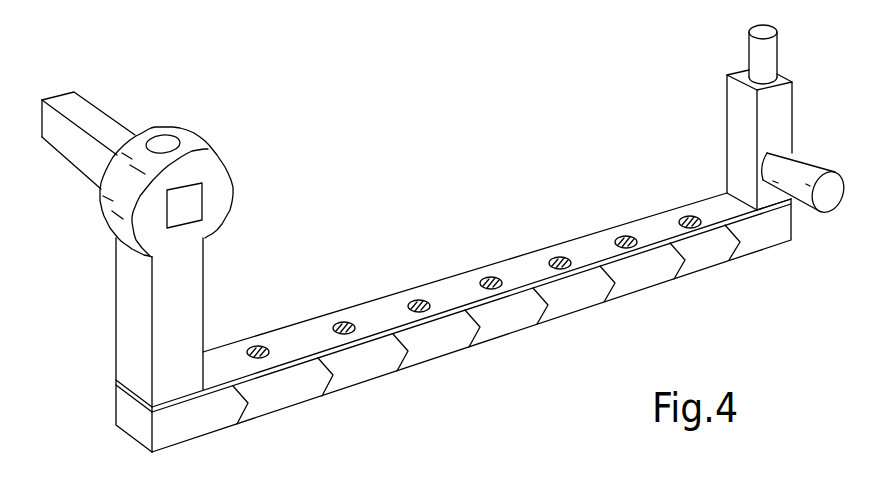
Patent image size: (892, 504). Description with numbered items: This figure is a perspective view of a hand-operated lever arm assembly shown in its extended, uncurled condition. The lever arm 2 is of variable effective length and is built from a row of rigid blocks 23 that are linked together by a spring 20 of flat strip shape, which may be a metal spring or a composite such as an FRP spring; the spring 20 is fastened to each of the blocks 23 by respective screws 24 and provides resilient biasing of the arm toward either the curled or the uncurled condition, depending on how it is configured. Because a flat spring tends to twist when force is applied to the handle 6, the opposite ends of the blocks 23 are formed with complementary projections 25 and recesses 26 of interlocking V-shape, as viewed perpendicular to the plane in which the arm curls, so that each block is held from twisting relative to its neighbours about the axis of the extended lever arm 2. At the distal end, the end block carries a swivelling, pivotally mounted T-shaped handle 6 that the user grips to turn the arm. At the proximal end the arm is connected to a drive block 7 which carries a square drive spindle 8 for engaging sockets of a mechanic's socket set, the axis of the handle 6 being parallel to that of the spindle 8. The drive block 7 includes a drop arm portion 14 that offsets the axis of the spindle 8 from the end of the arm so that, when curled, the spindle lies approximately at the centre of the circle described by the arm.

The lever arm 2 is at (501, 371).
The handle 6 is at (826, 209).
The drive block 7 is at (177, 380).
The drive spindle 8 is at (82, 152).
The drop arm portion 14 is at (183, 287).
The spring 20 is at (447, 294).
The blocks 23 is at (356, 368).
The screws 24 is at (339, 322).
The projections 25 is at (544, 310).
The recesses 26 is at (598, 300).